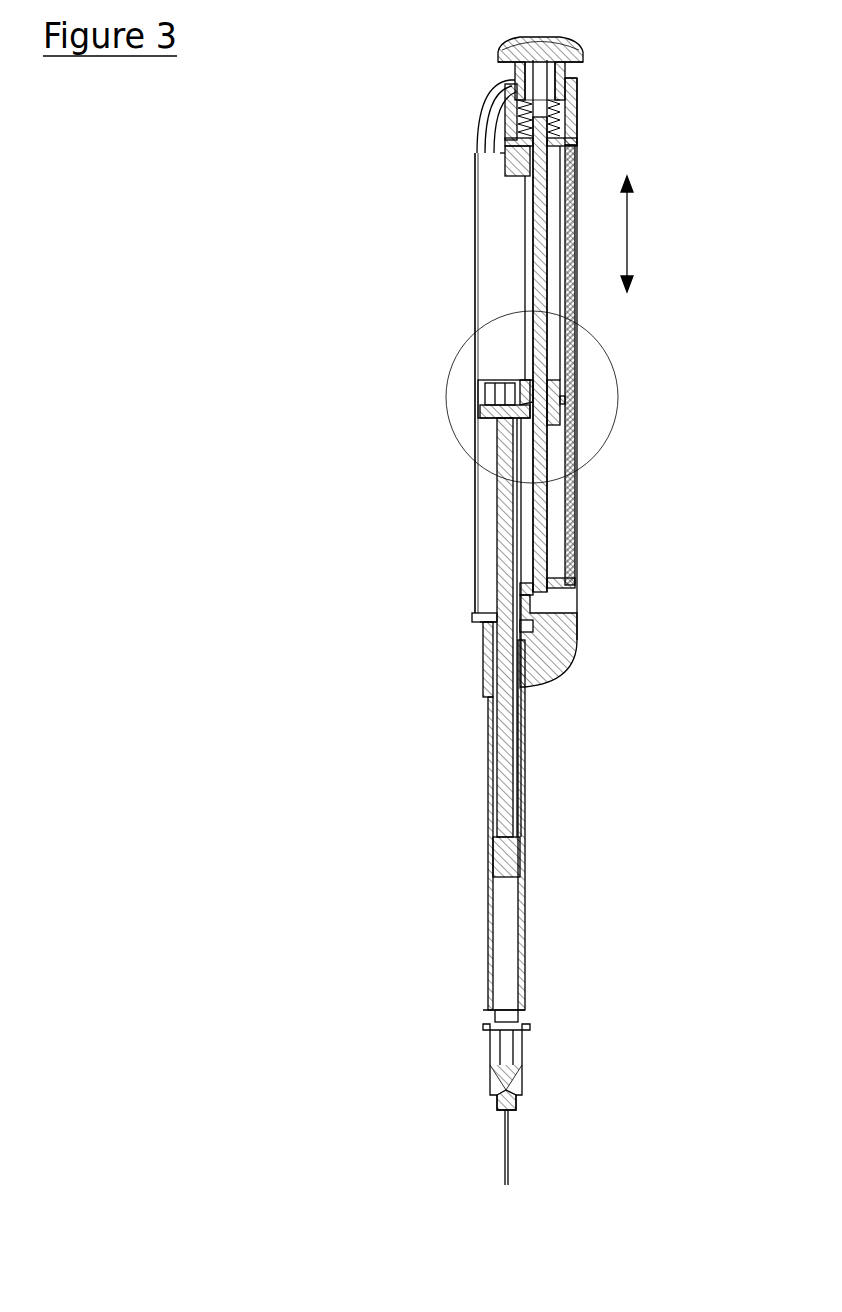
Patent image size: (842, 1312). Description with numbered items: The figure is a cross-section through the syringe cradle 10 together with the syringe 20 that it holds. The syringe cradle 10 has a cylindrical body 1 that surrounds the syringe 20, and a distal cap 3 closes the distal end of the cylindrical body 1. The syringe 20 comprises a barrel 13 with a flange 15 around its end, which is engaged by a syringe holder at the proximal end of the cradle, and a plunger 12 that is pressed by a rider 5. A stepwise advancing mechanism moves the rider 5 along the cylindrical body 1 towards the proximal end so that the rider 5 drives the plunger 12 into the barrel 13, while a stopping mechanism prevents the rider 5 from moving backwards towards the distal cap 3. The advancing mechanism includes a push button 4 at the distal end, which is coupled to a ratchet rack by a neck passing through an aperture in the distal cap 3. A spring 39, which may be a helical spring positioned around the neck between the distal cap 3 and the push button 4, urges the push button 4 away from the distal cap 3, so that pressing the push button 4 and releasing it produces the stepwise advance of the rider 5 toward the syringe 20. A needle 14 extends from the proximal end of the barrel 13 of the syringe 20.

The cylindrical body 1 is at (495, 298).
The distal cap 3 is at (492, 93).
The push button 4 is at (565, 50).
The rider 5 is at (483, 390).
The syringe cradle 10 is at (600, 557).
The plunger 12 is at (505, 719).
The barrel 13 is at (525, 823).
The needle 14 is at (505, 1170).
The flange 15 is at (507, 418).
The syringe 20 is at (545, 770).
The spring 39 is at (518, 123).